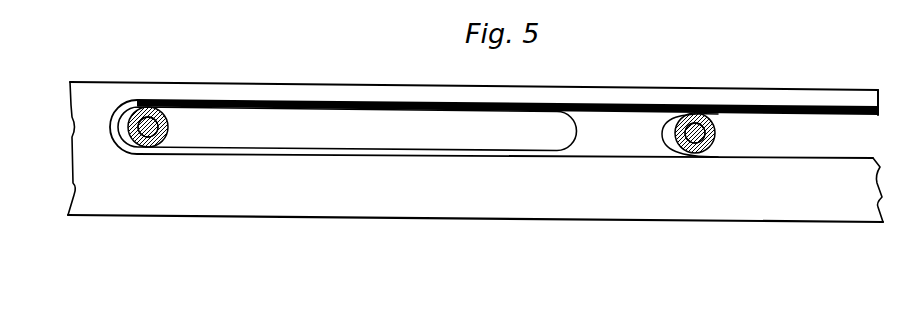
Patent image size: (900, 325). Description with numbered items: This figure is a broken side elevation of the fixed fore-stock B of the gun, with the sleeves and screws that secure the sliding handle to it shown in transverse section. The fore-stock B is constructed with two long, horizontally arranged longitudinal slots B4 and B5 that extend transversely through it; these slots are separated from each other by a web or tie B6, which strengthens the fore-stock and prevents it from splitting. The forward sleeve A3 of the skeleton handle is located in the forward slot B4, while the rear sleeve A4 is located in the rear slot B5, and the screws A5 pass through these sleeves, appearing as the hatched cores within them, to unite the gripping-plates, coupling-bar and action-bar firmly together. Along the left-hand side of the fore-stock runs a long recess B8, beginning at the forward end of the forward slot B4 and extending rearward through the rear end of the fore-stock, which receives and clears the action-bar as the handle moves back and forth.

The fore-stock B is at (475, 152).
The forward slot B4 is at (362, 123).
The rear slot B5 is at (772, 131).
The web or tie B6 is at (612, 130).
The recess B8 is at (204, 102).
The forward sleeve A3 is at (169, 128).
The rear sleeve A4 is at (713, 113).
The screw A5 is at (698, 114).